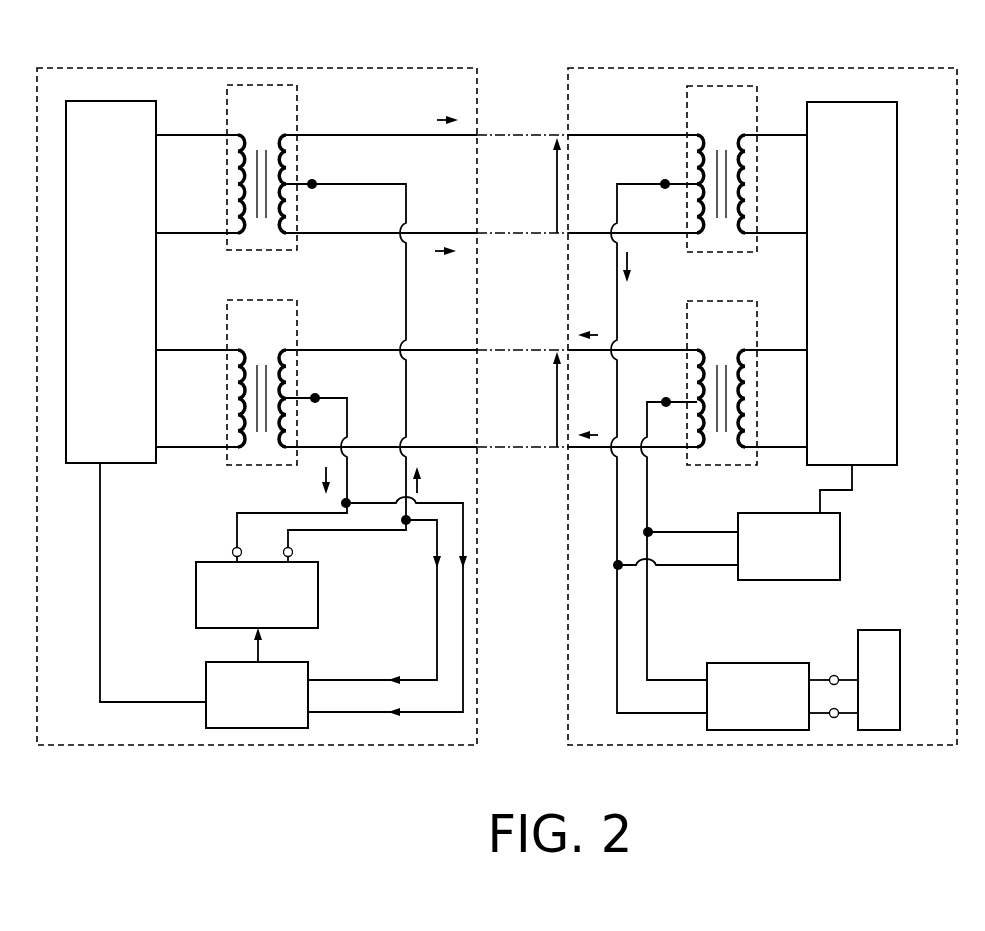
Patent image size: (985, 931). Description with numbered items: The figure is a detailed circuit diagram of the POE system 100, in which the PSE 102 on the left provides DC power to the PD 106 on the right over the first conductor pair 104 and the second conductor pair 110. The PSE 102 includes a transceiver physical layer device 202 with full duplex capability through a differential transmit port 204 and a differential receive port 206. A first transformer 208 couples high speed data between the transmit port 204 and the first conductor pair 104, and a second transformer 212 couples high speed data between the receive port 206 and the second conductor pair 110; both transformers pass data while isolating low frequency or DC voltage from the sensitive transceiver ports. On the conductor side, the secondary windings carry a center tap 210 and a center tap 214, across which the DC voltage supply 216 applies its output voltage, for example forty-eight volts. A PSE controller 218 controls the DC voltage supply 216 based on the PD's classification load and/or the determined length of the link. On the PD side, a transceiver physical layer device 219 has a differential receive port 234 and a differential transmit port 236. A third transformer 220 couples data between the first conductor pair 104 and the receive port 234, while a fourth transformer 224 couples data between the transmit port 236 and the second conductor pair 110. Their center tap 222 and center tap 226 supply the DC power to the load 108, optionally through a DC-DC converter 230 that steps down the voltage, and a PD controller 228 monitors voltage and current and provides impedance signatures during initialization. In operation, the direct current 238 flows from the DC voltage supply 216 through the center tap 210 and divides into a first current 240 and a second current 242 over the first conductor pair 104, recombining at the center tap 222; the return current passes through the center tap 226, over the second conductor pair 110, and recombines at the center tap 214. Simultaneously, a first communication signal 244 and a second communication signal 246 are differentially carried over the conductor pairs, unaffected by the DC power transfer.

The POE system 100 is at (918, 36).
The PSE 102 is at (217, 68).
The first conductor pair 104 is at (495, 217).
The PD 106 is at (665, 70).
The load 108 is at (888, 630).
The second conductor pair 110 is at (535, 363).
The transceiver physical layer device 202 is at (98, 343).
The differential transmit port 204 is at (156, 178).
The differential receive port 206 is at (156, 397).
The first transformer 208 is at (249, 114).
The center tap 210 is at (315, 180).
The second transformer 212 is at (249, 329).
The center tap 214 is at (317, 393).
The DC voltage supply 216 is at (196, 597).
The PSE controller 218 is at (206, 697).
The transceiver physical layer device 219 is at (839, 343).
The third transformer 220 is at (709, 114).
The center tap 222 is at (665, 180).
The fourth transformer 224 is at (709, 329).
The center tap 226 is at (668, 400).
The PD controller 228 is at (840, 547).
The DC-DC converter 230 is at (747, 663).
The differential receive port 234 is at (807, 178).
The differential transmit port 236 is at (807, 397).
The direct current 238 is at (435, 478).
The first current 240 is at (425, 104).
The second current 242 is at (450, 283).
The first communication signal 244 is at (557, 168).
The second communication signal 246 is at (557, 385).